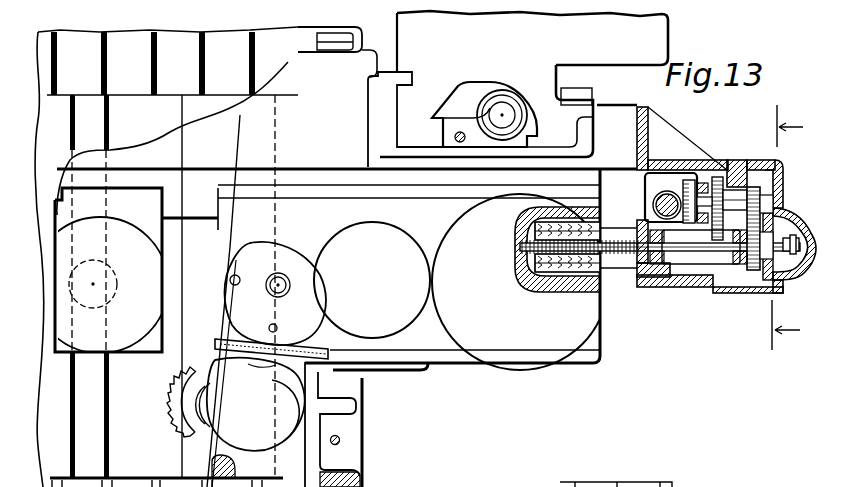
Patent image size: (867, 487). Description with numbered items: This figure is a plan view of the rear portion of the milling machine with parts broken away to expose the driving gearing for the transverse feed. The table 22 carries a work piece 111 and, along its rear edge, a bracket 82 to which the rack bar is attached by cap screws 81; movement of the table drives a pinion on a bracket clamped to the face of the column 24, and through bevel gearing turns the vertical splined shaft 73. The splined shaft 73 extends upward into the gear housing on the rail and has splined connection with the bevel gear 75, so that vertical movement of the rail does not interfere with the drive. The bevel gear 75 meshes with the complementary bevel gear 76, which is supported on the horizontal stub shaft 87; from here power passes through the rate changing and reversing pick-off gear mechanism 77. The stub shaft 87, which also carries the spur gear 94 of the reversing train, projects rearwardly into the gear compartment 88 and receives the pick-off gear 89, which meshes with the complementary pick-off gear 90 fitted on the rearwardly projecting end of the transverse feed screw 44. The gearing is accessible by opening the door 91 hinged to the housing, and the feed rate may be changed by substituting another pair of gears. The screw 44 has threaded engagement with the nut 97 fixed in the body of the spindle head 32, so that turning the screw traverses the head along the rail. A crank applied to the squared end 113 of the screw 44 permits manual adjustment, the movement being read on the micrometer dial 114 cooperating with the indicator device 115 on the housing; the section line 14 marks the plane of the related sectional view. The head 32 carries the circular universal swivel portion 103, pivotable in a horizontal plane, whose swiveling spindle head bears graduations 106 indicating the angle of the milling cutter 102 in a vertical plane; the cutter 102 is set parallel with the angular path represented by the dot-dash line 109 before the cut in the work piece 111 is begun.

The section line of Fig. 14 is at (776, 227).
The table 22 is at (272, 62).
The column 24 is at (654, 44).
The spindle head 32 is at (342, 208).
The transverse feed screw 44 is at (617, 243).
The splined shaft 73 is at (666, 189).
The bevel gear 75 is at (658, 188).
The bevel gear 76 is at (686, 181).
The pick-off gear mechanism 77 is at (740, 157).
The cap screws 81 is at (340, 431).
The bracket 82 is at (352, 449).
The stub shaft 87 is at (750, 173).
The gear compartment 88 is at (777, 173).
The pick-off gear 89 is at (763, 180).
The pick-off gear 90 is at (754, 293).
The door 91 is at (778, 208).
The spur gear 94 is at (721, 174).
The nut 97 is at (600, 268).
The milling cutter 102 is at (180, 402).
The universal swivel portion 103 is at (229, 330).
The graduations 106 is at (288, 349).
The dot-dash line 109 is at (235, 157).
The work piece 111 is at (100, 410).
The squared end 113 is at (802, 232).
The micrometer dial 114 is at (784, 270).
The indicator device 115 is at (782, 292).